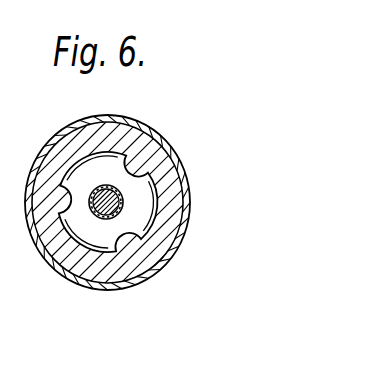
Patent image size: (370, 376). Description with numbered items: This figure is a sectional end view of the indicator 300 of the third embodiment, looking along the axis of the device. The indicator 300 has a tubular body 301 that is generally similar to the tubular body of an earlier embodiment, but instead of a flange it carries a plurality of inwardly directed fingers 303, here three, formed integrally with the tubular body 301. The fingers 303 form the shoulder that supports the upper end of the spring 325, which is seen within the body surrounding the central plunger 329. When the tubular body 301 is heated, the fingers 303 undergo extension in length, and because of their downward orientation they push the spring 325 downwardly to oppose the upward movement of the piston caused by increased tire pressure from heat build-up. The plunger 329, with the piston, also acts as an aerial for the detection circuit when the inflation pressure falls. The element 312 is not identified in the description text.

The indicator 300 is at (237, 70).
The tubular body 301 is at (50, 272).
The inwardly directed fingers 303 is at (132, 173).
The sleeve liner 312 is at (177, 253).
The spring 325 is at (85, 157).
The plunger 329 is at (124, 199).